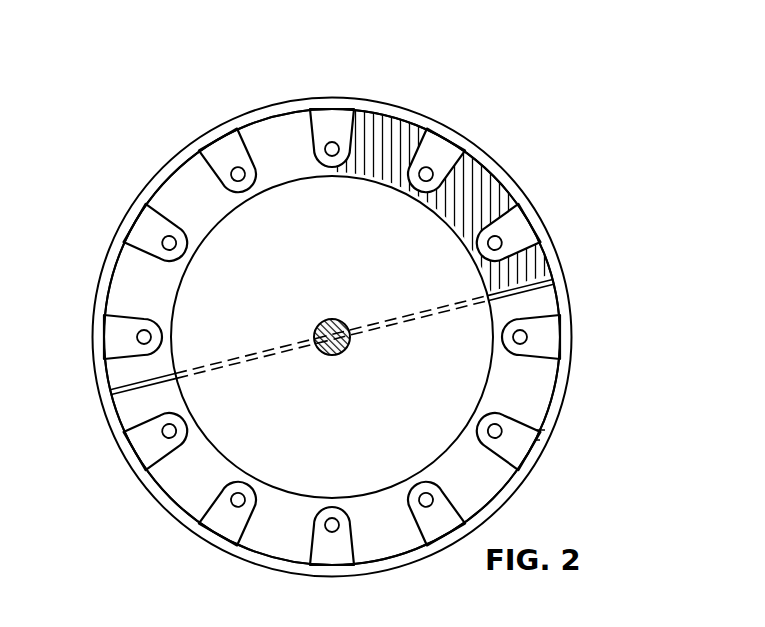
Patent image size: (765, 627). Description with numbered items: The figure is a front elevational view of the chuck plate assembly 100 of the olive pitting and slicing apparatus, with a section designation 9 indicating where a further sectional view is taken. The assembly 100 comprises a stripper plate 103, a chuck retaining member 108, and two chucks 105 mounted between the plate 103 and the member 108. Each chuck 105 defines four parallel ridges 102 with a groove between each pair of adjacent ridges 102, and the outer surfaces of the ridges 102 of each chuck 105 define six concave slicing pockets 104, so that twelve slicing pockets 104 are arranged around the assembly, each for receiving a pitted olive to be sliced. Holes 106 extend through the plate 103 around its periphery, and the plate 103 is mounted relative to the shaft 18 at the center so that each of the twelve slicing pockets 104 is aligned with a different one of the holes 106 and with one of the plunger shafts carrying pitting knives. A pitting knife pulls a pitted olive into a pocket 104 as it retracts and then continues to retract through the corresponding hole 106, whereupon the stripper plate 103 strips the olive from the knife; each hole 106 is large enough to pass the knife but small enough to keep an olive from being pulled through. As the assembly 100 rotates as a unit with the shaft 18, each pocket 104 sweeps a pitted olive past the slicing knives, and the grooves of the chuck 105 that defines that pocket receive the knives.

The chuck plate assembly 100 is at (582, 77).
The ridges 102 is at (253, 122).
The stripper plate 103 is at (400, 106).
The slicing pockets 104 is at (343, 127).
The chucks 105 is at (268, 108).
The holes 106 is at (332, 140).
The chuck retaining member 108 is at (155, 222).
The shaft 18 is at (336, 319).
The section line 9- 9 is at (68, 337).